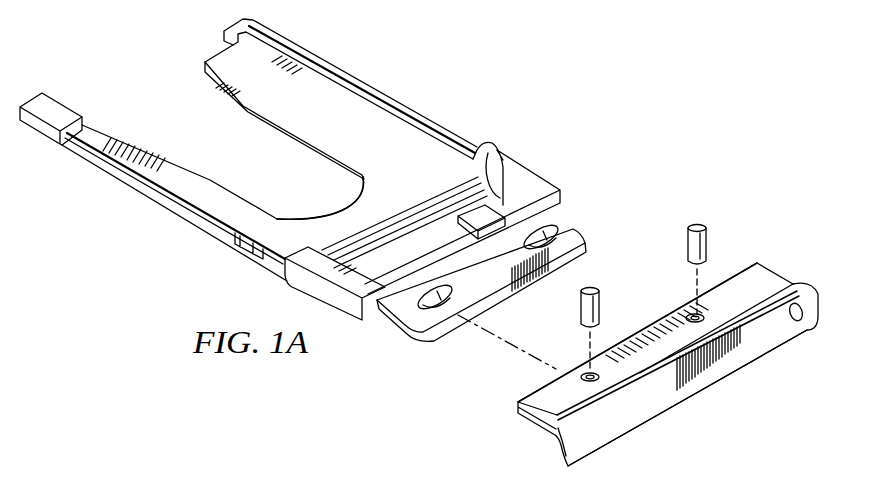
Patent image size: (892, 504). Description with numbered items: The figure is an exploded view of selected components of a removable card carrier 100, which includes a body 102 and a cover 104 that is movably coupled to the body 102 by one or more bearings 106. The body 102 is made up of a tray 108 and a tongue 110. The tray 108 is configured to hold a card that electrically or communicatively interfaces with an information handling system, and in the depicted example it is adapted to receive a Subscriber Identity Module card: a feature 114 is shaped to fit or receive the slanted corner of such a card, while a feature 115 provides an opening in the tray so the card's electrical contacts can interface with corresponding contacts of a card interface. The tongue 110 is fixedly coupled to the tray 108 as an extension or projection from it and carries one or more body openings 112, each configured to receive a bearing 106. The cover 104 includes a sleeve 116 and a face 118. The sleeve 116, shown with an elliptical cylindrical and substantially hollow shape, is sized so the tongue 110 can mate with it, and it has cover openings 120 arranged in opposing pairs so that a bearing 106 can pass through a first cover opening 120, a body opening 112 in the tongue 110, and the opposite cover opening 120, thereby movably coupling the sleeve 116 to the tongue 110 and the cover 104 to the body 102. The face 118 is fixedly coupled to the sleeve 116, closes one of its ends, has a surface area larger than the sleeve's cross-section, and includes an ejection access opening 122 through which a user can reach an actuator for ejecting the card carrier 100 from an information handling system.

The card carrier 100 is at (694, 96).
The body 102 is at (152, 188).
The cover 104 is at (673, 352).
The bearing 106 is at (599, 303).
The tray 108 is at (233, 204).
The tongue 110 is at (479, 273).
The body opening 112 is at (553, 228).
The feature 114 is at (487, 178).
The feature 115 is at (292, 168).
The sleeve 116 is at (762, 287).
The face 118 is at (667, 397).
The cover opening 120 is at (582, 377).
The ejection access opening 122 is at (803, 322).